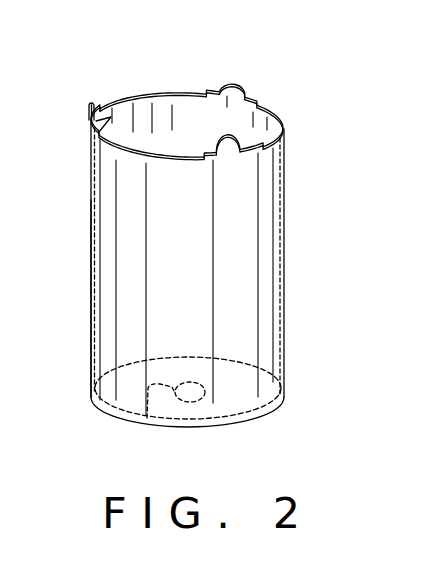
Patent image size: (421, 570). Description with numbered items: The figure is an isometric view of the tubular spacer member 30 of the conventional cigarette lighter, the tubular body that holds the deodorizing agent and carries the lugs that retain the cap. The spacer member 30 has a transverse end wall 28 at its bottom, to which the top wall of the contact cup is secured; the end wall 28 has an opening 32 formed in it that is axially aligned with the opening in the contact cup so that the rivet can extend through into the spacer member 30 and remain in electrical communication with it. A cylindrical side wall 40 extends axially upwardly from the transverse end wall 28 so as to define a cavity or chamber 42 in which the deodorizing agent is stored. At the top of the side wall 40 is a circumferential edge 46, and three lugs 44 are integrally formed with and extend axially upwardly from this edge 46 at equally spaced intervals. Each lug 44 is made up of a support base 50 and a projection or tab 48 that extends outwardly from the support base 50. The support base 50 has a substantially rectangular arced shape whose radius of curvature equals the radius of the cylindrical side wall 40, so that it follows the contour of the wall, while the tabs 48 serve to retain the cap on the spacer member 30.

The transverse end wall 28 is at (255, 390).
The tubular spacer member 30 is at (296, 251).
The opening 32 is at (147, 418).
The cylindrical side wall 40 is at (90, 305).
The cavity or chamber 42 is at (153, 136).
The lug 44 is at (89, 108).
The circumferential edge 46 is at (133, 153).
The projection or tab 48 is at (91, 104).
The support base 50 is at (112, 117).